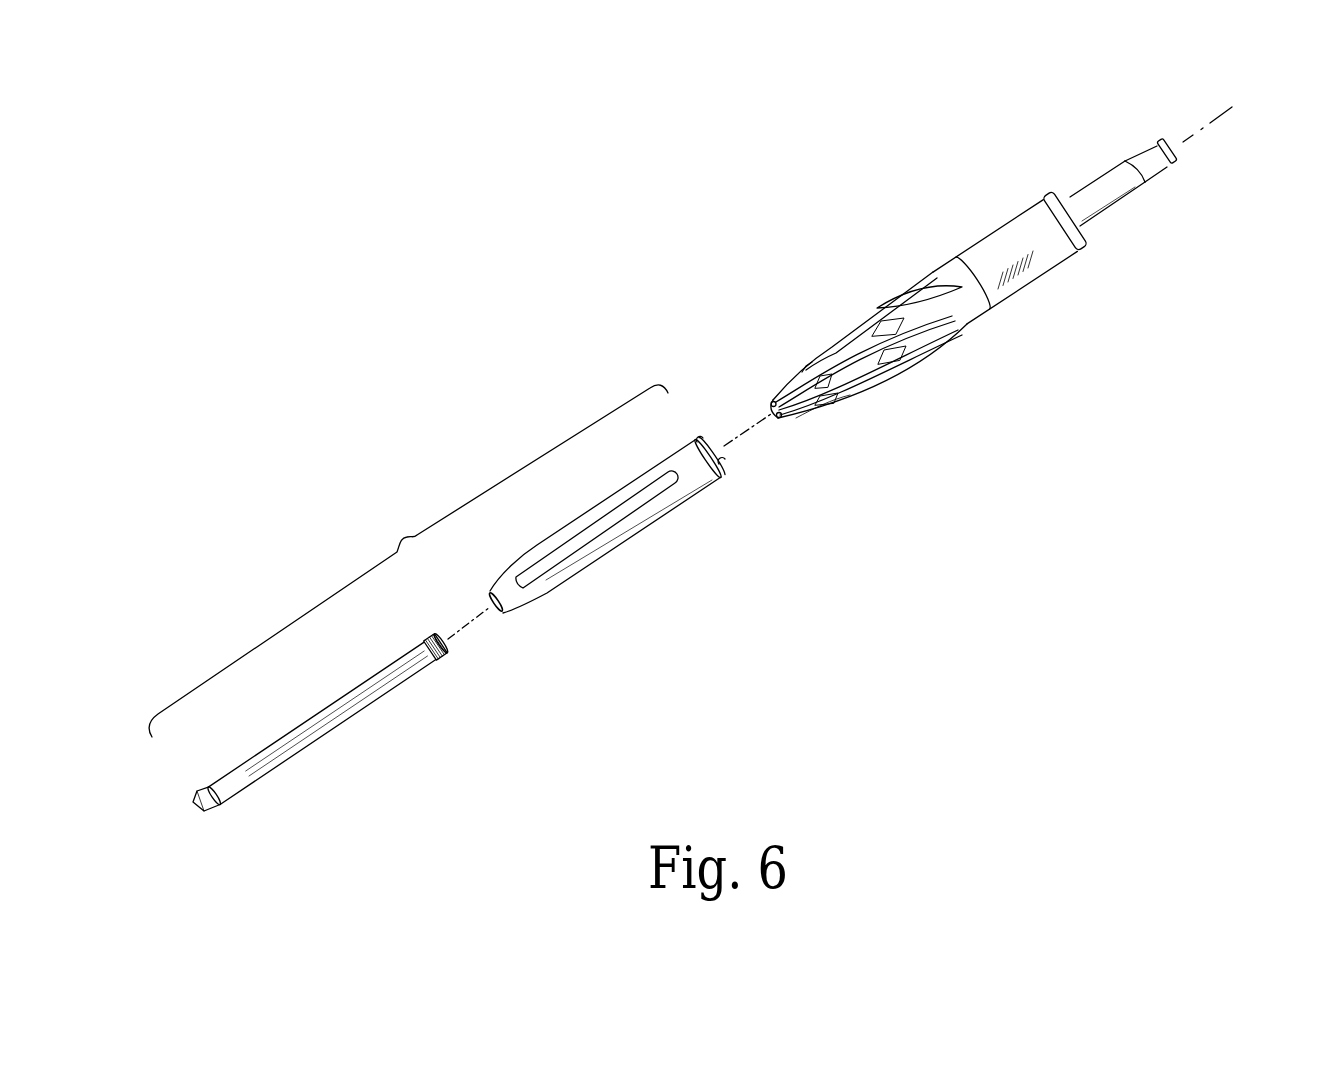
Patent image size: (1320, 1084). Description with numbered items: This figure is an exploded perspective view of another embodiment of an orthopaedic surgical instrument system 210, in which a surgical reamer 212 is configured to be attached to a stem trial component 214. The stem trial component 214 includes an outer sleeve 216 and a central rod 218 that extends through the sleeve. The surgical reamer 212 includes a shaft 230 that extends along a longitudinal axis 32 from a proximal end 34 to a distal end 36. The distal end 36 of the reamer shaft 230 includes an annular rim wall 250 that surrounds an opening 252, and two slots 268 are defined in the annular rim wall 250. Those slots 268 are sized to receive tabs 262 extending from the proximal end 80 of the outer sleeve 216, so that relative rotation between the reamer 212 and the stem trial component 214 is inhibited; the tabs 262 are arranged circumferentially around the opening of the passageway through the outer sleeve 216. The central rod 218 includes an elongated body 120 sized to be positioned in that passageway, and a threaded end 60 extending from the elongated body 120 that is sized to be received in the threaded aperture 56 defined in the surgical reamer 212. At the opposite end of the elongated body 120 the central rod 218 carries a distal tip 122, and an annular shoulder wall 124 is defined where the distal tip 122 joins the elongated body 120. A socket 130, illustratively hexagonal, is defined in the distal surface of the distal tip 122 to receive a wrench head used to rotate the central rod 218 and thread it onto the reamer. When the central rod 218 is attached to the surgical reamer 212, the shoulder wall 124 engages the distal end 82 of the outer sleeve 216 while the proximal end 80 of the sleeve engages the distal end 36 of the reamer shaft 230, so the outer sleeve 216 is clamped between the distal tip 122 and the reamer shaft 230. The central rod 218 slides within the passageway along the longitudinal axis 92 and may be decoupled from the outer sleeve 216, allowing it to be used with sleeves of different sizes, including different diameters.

The orthopaedic surgical instrument system 210 is at (287, 176).
The surgical reamer 212 is at (975, 375).
The stem trial component 214 is at (404, 537).
The outer sleeve 216 is at (603, 552).
The central rod 218 is at (305, 738).
The elongated body 120 is at (388, 682).
The distal tip 122 is at (208, 811).
The annular shoulder wall 124 is at (210, 786).
The socket 130 is at (195, 804).
The threaded end 60 is at (440, 651).
The longitudinal axis 92 is at (453, 624).
The distal end 82 is at (499, 620).
The proximal end 80 is at (714, 485).
The tabs 262 is at (712, 446).
The annular rim wall 250 is at (778, 421).
The opening 252 is at (748, 401).
The threaded aperture 56 is at (802, 376).
The distal end 36 is at (803, 418).
The slots 268 is at (797, 438).
The shaft 230 is at (900, 294).
The proximal end 34 is at (1085, 238).
The longitudinal axis 32 is at (1213, 120).